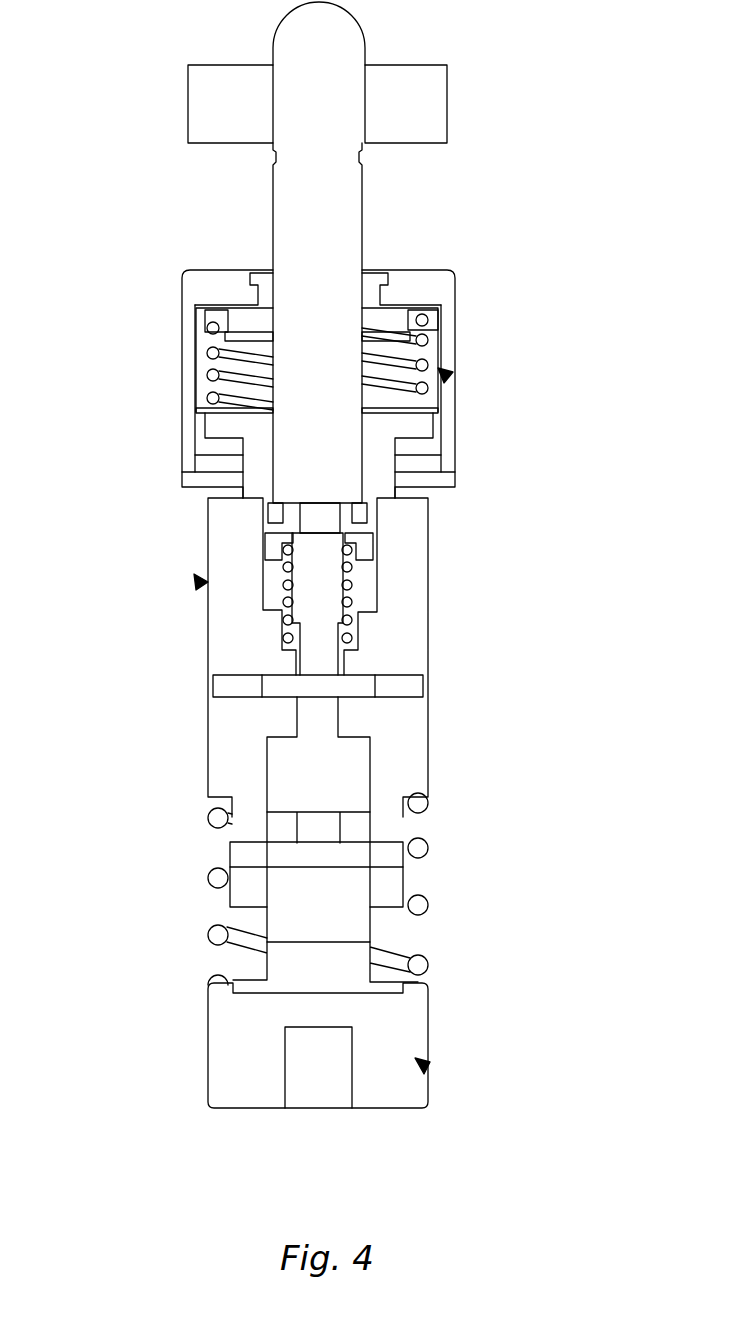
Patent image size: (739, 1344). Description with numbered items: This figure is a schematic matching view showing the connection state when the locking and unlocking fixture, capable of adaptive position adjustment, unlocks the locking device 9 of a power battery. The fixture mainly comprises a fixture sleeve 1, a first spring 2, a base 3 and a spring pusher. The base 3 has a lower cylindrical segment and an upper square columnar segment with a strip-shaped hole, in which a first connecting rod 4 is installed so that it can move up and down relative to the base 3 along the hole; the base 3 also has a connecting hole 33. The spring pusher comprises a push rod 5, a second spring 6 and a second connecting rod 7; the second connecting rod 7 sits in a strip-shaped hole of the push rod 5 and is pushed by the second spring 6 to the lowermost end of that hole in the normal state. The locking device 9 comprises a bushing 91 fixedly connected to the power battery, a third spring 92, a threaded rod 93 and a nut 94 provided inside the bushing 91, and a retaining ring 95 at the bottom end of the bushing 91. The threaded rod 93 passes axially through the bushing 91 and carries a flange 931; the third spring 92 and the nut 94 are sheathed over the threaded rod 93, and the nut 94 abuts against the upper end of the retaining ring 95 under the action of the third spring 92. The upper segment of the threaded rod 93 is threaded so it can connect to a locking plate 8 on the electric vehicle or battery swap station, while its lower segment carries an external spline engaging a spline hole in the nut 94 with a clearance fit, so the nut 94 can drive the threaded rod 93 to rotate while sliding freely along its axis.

The fixture sleeve 1 is at (205, 581).
The first spring 2 is at (213, 880).
The base 3 is at (418, 1060).
The connecting hole 33 is at (313, 1058).
The first connecting rod 4 is at (370, 853).
The push rod 5 is at (327, 547).
The second spring 6 is at (350, 605).
The second connecting rod 7 is at (355, 690).
The locking plate 8 is at (425, 102).
The locking device 9 is at (450, 374).
The bushing 91 is at (207, 288).
The third spring 92 is at (205, 347).
The threaded rod 93 is at (200, 387).
The flange 931 is at (390, 318).
The nut 94 is at (217, 453).
The retaining ring 95 is at (217, 477).